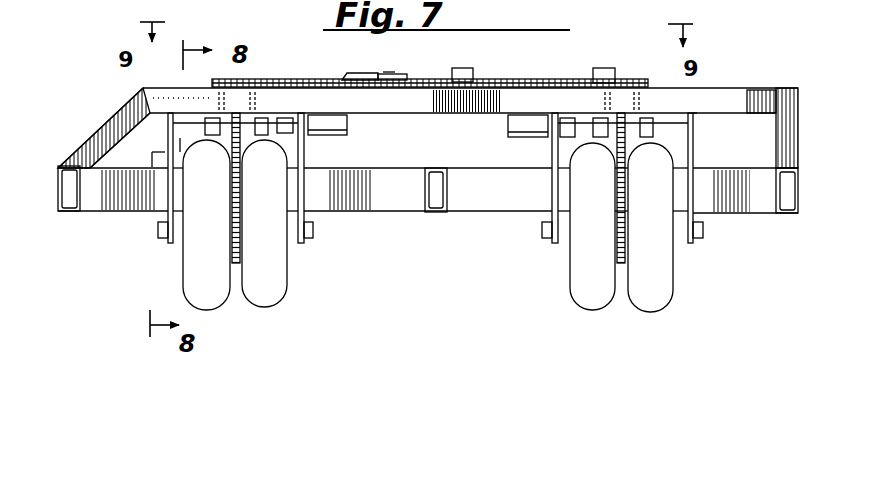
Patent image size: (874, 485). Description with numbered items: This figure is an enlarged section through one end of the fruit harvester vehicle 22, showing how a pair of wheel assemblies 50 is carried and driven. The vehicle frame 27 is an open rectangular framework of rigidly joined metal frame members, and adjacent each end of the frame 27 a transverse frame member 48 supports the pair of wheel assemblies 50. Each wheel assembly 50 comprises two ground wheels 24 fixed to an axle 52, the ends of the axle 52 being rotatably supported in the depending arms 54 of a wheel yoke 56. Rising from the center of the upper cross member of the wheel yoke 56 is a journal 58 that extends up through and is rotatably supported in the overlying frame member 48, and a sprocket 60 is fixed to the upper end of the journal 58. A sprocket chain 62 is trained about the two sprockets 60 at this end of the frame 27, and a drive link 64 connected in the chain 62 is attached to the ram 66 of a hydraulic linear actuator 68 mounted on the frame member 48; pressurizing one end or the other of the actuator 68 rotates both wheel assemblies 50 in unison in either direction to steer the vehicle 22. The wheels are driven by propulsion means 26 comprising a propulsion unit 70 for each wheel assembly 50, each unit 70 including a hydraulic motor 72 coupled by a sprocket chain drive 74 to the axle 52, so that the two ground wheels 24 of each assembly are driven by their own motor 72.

The vehicle 22 is at (809, 102).
The ground wheels 24 is at (227, 303).
The propulsion means 26 is at (359, 143).
The vehicle frame 27 is at (803, 207).
The transverse frame member 48 is at (773, 90).
The wheel assembly 50 is at (166, 258).
The axle 52 is at (292, 243).
The depending arms 54 is at (557, 197).
The wheel yoke 56 is at (166, 134).
The journal 58 is at (245, 107).
The sprocket 60 is at (238, 88).
The sprocket chain 62 is at (340, 80).
The drive link 64 is at (380, 74).
The ram 66 is at (432, 80).
The hydraulic linear actuator 68 is at (572, 79).
The propulsion unit 70 is at (352, 126).
The hydraulic motor 72 is at (324, 137).
The sprocket chain drive 74 is at (623, 260).